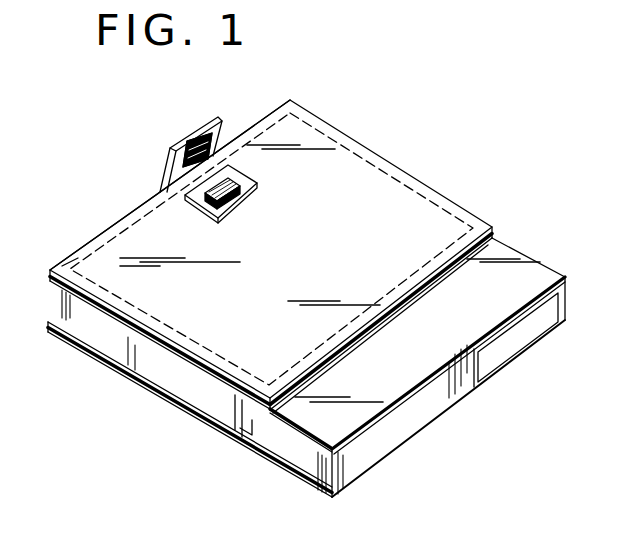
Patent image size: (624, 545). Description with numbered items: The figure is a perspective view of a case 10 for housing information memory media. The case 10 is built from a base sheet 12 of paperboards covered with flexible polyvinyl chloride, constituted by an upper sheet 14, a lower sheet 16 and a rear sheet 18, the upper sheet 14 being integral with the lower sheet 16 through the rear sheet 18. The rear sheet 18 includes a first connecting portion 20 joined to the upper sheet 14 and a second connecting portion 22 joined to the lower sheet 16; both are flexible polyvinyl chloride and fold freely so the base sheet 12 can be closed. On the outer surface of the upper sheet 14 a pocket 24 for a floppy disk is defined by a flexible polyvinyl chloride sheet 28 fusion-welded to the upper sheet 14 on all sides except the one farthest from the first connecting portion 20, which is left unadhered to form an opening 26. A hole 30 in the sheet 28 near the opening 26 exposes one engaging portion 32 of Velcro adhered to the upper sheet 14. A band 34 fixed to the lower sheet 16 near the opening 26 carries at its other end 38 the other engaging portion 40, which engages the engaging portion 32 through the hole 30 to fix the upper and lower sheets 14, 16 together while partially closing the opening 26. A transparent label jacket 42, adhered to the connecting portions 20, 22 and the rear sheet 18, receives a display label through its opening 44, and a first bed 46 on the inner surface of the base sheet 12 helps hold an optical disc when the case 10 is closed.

The case 10 is at (428, 140).
The base sheet 12 is at (549, 265).
The upper sheet 14 is at (519, 260).
The lower sheet 16 is at (128, 384).
The rear sheet 18 is at (377, 450).
The first connecting portion 20 is at (537, 293).
The second connecting portion 22 is at (452, 410).
The pocket 24 is at (372, 175).
The opening 26 is at (118, 220).
The flexible polyvinyl chloride sheet 28 is at (68, 262).
The hole 30 is at (247, 177).
The one engaging portion 32 is at (232, 200).
The band 34 is at (160, 188).
The other end 38 is at (168, 152).
The other engaging portion 40 is at (190, 160).
The label jacket 42 is at (526, 336).
The opening 44 is at (567, 300).
The first bed 46 is at (230, 412).